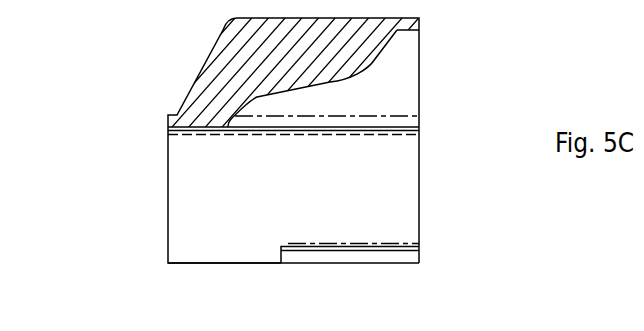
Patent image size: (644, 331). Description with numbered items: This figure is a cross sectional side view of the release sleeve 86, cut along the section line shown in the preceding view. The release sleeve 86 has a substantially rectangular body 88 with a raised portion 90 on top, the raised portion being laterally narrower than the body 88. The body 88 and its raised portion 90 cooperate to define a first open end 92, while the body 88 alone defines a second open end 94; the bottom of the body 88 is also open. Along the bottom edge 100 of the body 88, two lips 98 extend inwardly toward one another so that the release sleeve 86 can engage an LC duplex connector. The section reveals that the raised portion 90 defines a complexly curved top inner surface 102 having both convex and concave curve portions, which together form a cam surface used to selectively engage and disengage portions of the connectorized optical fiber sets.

The release sleeve 86 is at (148, 82).
The body 88 is at (167, 218).
The raised portion 90 is at (205, 60).
The first open end 92 is at (420, 190).
The second open end 94 is at (167, 165).
The lips 98 is at (317, 246).
The bottom edge 100 is at (208, 265).
The curved top inner surface 102 is at (332, 82).